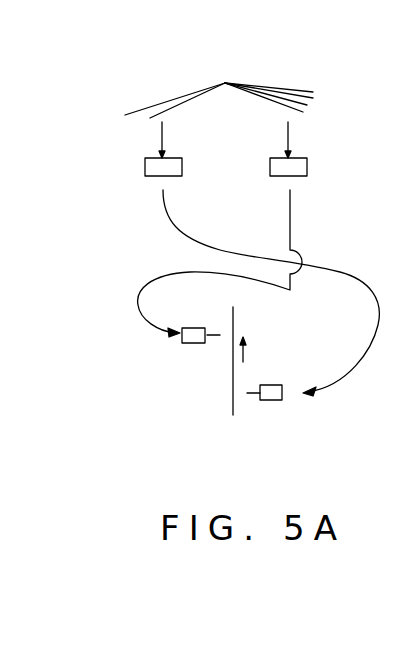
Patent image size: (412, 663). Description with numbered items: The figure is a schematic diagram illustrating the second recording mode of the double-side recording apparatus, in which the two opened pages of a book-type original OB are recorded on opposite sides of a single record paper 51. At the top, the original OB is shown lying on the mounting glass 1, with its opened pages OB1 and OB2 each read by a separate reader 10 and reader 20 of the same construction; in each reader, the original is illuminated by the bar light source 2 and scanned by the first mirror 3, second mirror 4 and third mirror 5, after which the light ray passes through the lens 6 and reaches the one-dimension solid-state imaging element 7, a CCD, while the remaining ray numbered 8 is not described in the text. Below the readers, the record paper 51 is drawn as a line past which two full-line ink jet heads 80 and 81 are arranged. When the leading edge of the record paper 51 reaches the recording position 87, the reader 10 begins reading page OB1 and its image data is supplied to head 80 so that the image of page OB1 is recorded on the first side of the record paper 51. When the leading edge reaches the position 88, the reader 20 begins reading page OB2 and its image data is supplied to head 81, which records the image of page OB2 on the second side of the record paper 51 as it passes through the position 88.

The mounting glass 1 is at (167, 105).
The bar light source 2 is at (176, 108).
The first mirror 3 is at (155, 140).
The second mirror 4 is at (294, 138).
The third mirror 5 is at (273, 105).
The lens 6 is at (308, 105).
The one-dimension solid-state imaging element 7 is at (314, 98).
The light ray 8 is at (314, 92).
The book-type original OB is at (192, 92).
The opened page OB1 is at (188, 101).
The opened page OB2 is at (253, 94).
The reader 10 is at (145, 170).
The reader 20 is at (307, 165).
The record paper 51 is at (232, 385).
The full-line ink jet head 80 is at (273, 385).
The full-line ink jet head 81 is at (192, 328).
The recording position 87 is at (240, 395).
The position 88 is at (227, 337).